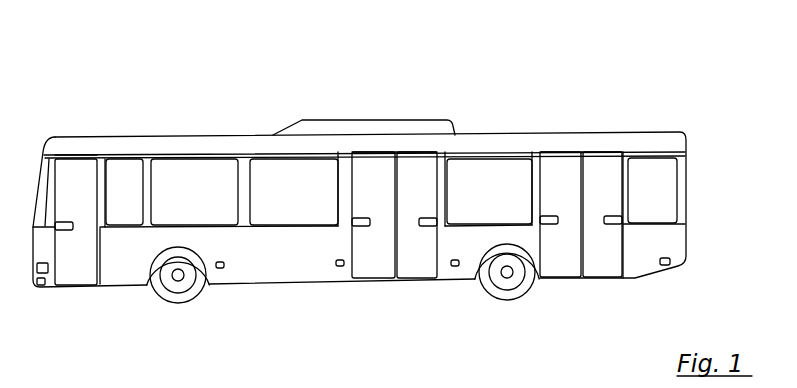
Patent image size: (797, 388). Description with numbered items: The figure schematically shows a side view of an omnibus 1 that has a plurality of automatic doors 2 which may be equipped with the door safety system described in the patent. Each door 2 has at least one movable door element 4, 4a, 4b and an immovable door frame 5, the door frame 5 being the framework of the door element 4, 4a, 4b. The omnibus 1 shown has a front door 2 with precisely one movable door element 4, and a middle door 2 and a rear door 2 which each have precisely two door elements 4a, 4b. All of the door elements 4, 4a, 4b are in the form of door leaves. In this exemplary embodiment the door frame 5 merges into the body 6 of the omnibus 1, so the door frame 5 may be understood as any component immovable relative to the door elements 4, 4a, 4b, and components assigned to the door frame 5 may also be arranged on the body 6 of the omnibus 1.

The omnibus 1 is at (609, 72).
The automatic door 2 is at (73, 153).
The movable door element 4 is at (78, 276).
The door element 4a is at (378, 269).
The door element 4b is at (415, 269).
The door frame 5 is at (105, 276).
The body 6 is at (250, 276).